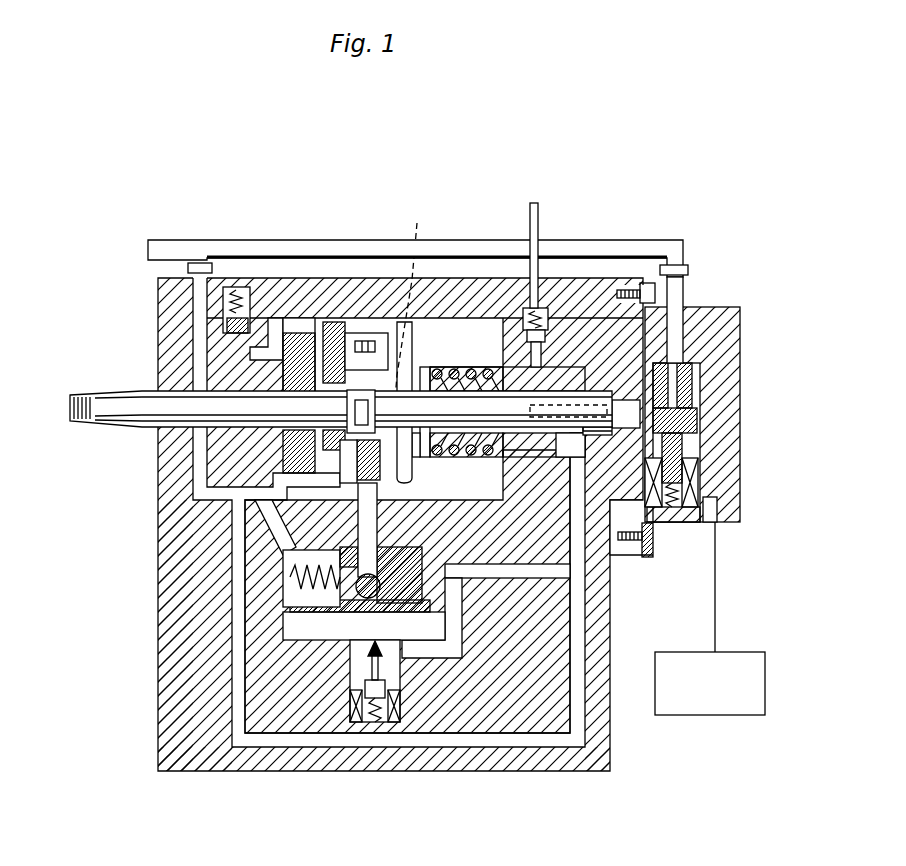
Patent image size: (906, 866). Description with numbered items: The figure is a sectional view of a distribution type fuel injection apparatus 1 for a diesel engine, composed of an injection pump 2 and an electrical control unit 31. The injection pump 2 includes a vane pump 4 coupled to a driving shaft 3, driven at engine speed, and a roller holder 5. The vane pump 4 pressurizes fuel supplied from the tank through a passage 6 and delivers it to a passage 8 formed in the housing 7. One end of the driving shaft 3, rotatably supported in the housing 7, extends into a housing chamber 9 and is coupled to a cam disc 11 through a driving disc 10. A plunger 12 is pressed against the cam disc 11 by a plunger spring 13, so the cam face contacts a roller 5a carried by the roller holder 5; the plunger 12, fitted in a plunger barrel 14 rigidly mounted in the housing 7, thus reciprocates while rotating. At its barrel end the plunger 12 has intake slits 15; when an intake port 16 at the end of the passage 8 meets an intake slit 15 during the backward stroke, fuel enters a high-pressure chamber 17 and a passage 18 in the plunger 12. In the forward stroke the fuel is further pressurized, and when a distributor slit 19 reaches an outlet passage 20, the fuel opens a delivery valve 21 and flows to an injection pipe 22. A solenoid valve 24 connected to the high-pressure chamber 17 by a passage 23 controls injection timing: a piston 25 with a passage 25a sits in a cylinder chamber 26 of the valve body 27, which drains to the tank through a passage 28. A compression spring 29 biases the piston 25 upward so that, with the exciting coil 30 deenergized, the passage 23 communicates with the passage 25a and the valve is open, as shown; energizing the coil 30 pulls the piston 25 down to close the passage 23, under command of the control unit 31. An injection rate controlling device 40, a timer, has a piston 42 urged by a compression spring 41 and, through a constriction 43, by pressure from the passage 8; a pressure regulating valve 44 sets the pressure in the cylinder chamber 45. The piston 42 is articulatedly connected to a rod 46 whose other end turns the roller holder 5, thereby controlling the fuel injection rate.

The fuel injection apparatus 1 is at (610, 212).
The injection pump 2 is at (146, 624).
The driving shaft 3 is at (153, 387).
The vane pump 4 is at (295, 318).
The roller holder 5 is at (339, 320).
The roller 5a is at (369, 348).
The passage 6 is at (161, 247).
The housing 7 is at (160, 527).
The passage 8 is at (516, 775).
The housing chamber 9 is at (468, 330).
The driving disc 10 is at (414, 297).
The cam disc 11 is at (412, 337).
The plunger 12 is at (473, 425).
The plunger spring 13 is at (428, 440).
The plunger barrel 14 is at (602, 366).
The intake slit 15 is at (585, 440).
The intake port 16 is at (572, 468).
The high-pressure chamber 17 is at (624, 462).
The passage 18 is at (573, 400).
The distributor slit 19 is at (502, 368).
The outlet passage 20 is at (540, 380).
The delivery valve 21 is at (557, 312).
The injection pipe 22 is at (543, 214).
The passage 23 is at (692, 382).
The solenoid valve 24 is at (696, 302).
The piston 25 is at (690, 455).
The passage 25a is at (694, 400).
The cylinder chamber 26 is at (736, 496).
The valve body 27 is at (732, 307).
The passage 28 is at (672, 243).
The compression spring 29 is at (683, 518).
The exciting coil 30 is at (656, 540).
The control unit 31 is at (684, 652).
The injection rate controlling device 40 is at (455, 541).
The compression spring 41 is at (290, 570).
The piston 42 is at (384, 606).
The constriction 43 is at (470, 570).
The pressure regulating valve 44 is at (404, 691).
The cylinder chamber 45 is at (473, 583).
The rod 46 is at (388, 533).